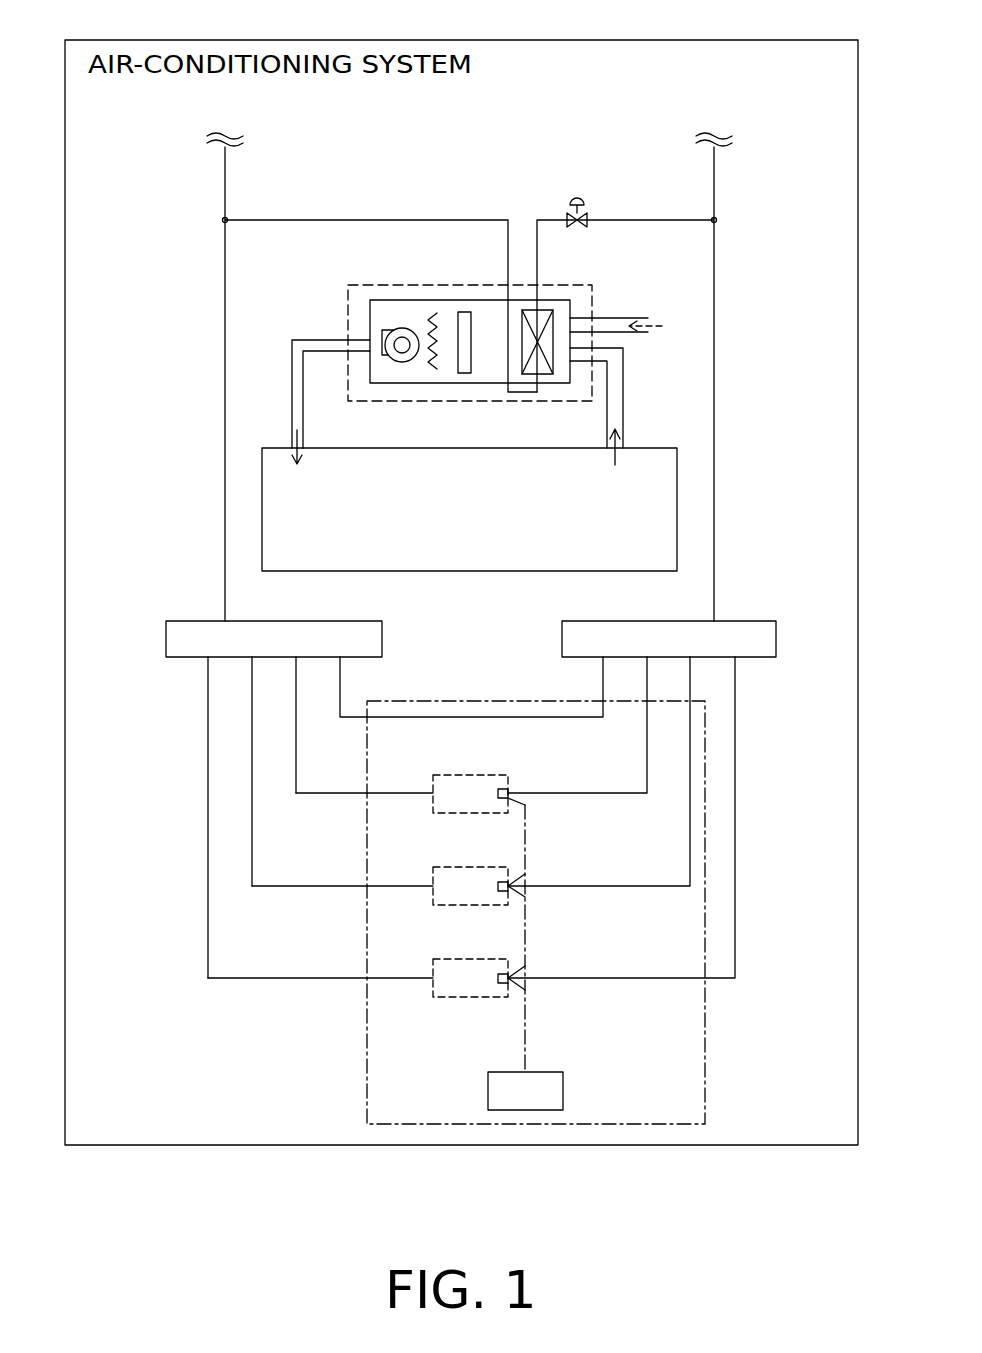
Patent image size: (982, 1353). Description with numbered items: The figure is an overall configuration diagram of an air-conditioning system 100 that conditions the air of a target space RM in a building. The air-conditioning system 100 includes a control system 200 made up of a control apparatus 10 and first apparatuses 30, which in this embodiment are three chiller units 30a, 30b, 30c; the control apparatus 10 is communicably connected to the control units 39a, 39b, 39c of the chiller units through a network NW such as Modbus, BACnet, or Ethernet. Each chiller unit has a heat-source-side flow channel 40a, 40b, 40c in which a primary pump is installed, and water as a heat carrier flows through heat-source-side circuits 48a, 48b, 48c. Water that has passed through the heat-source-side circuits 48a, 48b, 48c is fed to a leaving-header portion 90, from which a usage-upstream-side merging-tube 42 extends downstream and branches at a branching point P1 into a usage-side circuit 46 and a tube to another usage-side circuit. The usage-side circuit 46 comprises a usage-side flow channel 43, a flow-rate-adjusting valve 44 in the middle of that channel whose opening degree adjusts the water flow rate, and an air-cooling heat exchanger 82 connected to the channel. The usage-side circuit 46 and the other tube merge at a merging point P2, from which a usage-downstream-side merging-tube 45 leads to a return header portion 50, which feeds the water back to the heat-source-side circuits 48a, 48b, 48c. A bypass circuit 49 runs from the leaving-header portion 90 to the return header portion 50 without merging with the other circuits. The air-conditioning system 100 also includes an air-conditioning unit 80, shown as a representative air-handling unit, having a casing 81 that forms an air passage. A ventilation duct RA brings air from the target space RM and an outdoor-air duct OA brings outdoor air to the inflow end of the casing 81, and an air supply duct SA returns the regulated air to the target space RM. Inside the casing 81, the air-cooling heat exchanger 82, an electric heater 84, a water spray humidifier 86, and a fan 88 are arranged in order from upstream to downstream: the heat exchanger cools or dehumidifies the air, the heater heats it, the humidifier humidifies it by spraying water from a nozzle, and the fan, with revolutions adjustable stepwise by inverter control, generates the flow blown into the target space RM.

The air-conditioning system 100 is at (692, 40).
The control apparatus 10 is at (563, 1090).
The control system 200 is at (707, 1048).
The first apparatus 30 is at (440, 860).
The chiller unit 30a is at (473, 773).
The chiller unit 30b is at (473, 865).
The chiller unit 30c is at (473, 957).
The control unit 39a is at (505, 789).
The control unit 39b is at (505, 882).
The control unit 39c is at (505, 974).
The heat-source-side flow channel 40a is at (358, 793).
The heat-source-side flow channel 40b is at (358, 886).
The heat-source-side flow channel 40c is at (355, 978).
The usage-upstream-side merging-tube 42 is at (225, 458).
The usage-side flow channel 43 is at (297, 220).
The flow-rate-adjusting valve 44 is at (577, 197).
The usage-downstream-side merging-tube 45 is at (714, 420).
The usage-side circuit 46 is at (617, 211).
The heat-source-side circuit 48a is at (307, 797).
The heat-source-side circuit 48b is at (298, 890).
The heat-source-side circuit 48c is at (298, 983).
The bypass circuit 49 is at (603, 717).
The return header portion 50 is at (745, 618).
The air-conditioning unit 80 is at (348, 320).
The casing 81 is at (493, 300).
The air-cooling heat exchanger 82 is at (543, 310).
The electric heater 84 is at (464, 312).
The water spray humidifier 86 is at (430, 313).
The fan 88 is at (402, 328).
The leaving-header portion 90 is at (192, 618).
The branching point P1 is at (225, 220).
The merging point P2 is at (714, 220).
The air supply duct SA is at (292, 392).
The ventilation duct RA is at (623, 398).
The outdoor-air duct OA is at (610, 318).
The target space RM is at (618, 528).
The network NW is at (528, 1033).